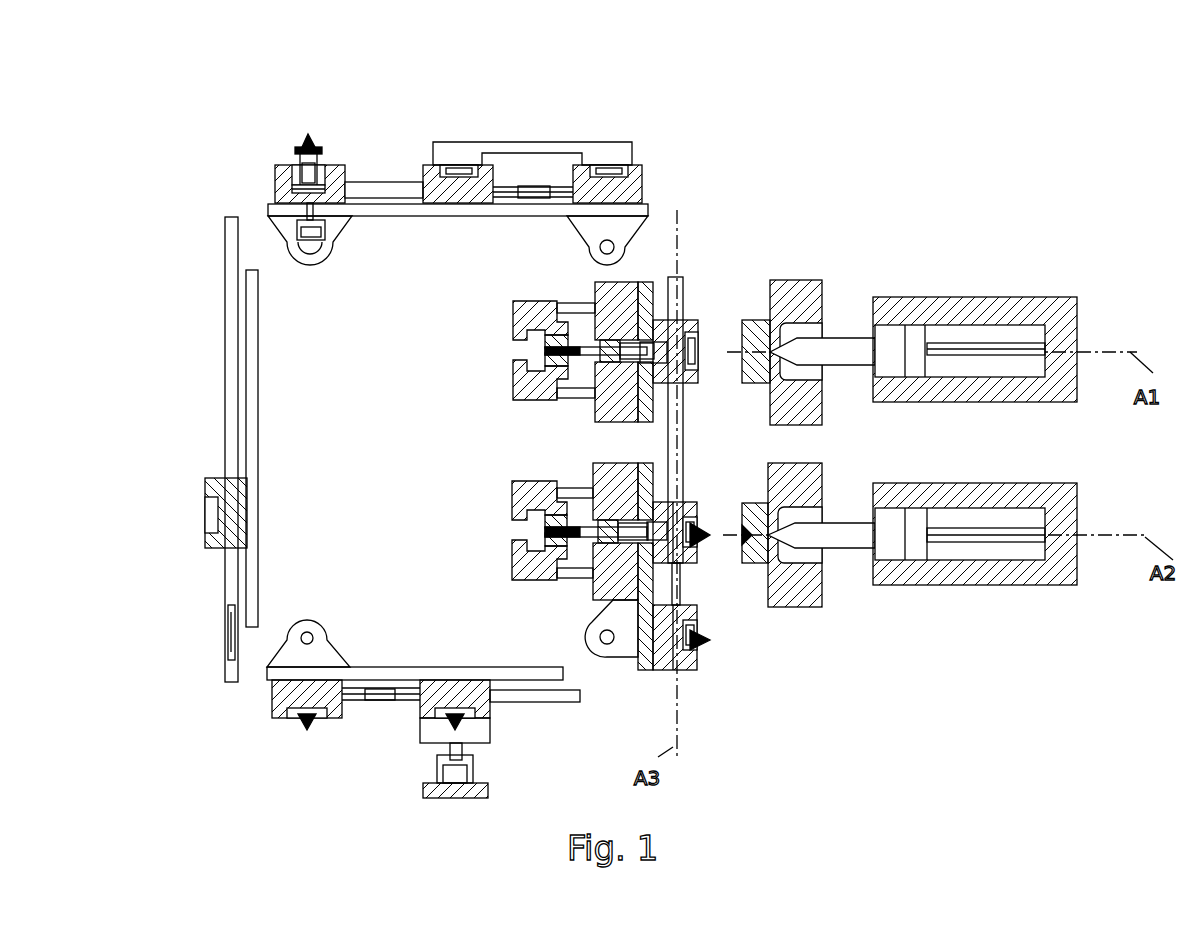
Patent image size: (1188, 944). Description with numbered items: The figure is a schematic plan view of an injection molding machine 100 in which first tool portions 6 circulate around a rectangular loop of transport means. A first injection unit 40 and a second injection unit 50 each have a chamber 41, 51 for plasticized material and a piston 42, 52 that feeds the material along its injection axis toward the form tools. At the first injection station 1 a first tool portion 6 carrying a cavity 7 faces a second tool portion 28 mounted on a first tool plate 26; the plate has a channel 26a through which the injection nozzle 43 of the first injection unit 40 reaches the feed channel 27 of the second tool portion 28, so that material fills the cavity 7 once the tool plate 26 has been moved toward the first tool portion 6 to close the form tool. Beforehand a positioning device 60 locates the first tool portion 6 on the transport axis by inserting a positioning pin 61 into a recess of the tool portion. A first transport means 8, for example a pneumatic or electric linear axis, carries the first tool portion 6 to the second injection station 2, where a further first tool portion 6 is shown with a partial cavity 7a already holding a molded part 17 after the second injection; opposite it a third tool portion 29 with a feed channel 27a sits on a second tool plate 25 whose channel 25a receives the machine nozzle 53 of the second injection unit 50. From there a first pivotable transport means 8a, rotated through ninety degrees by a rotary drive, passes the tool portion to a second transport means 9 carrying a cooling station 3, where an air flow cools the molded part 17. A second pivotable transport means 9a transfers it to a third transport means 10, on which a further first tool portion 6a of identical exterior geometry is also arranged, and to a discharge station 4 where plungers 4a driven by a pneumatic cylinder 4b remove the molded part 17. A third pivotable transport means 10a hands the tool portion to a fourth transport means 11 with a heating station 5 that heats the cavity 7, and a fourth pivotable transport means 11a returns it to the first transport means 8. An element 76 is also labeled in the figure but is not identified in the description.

The injection molding machine 100 is at (935, 122).
The first injection station 1 is at (742, 198).
The second injection station 2 is at (743, 680).
The cooling station 3 is at (507, 760).
The discharge station 4 is at (248, 140).
The plungers 4a is at (297, 157).
The pneumatic cylinder 4b is at (327, 230).
The heating station 5 is at (517, 120).
The first tool portion 6 is at (687, 325).
The further first tool portion 6a is at (215, 545).
The cavity 7 is at (693, 350).
The partial cavity 7a is at (699, 548).
The first transport means 8 is at (677, 320).
The first pivotable transport means 8a is at (622, 660).
The second transport means 9 is at (568, 705).
The second pivotable transport means 9a is at (267, 670).
The third transport means 10 is at (230, 385).
The third pivotable transport means 10a is at (283, 230).
The fourth transport means 11 is at (385, 190).
The fourth pivotable transport means 11a is at (582, 227).
The molded part 17 is at (702, 653).
The second tool plate 25 is at (807, 598).
The channel 25a is at (812, 557).
The first tool plate 26 is at (808, 288).
The channel 26a is at (808, 330).
The feed channel 27 is at (758, 352).
The feed channel 27a is at (785, 600).
The second tool portion 28 is at (750, 330).
The third tool portion 29 is at (755, 567).
The first injection unit 40 is at (1068, 252).
The chamber 41 is at (890, 363).
The piston 42 is at (917, 333).
The injection nozzle 43 is at (837, 345).
The second injection unit 50 is at (1045, 605).
The chamber 51 is at (892, 550).
The piston 52 is at (917, 552).
The machine nozzle 53 is at (832, 550).
The positioning device 60 is at (505, 413).
The positioning pin 61 is at (657, 348).
The nozzle tip 76 is at (752, 548).